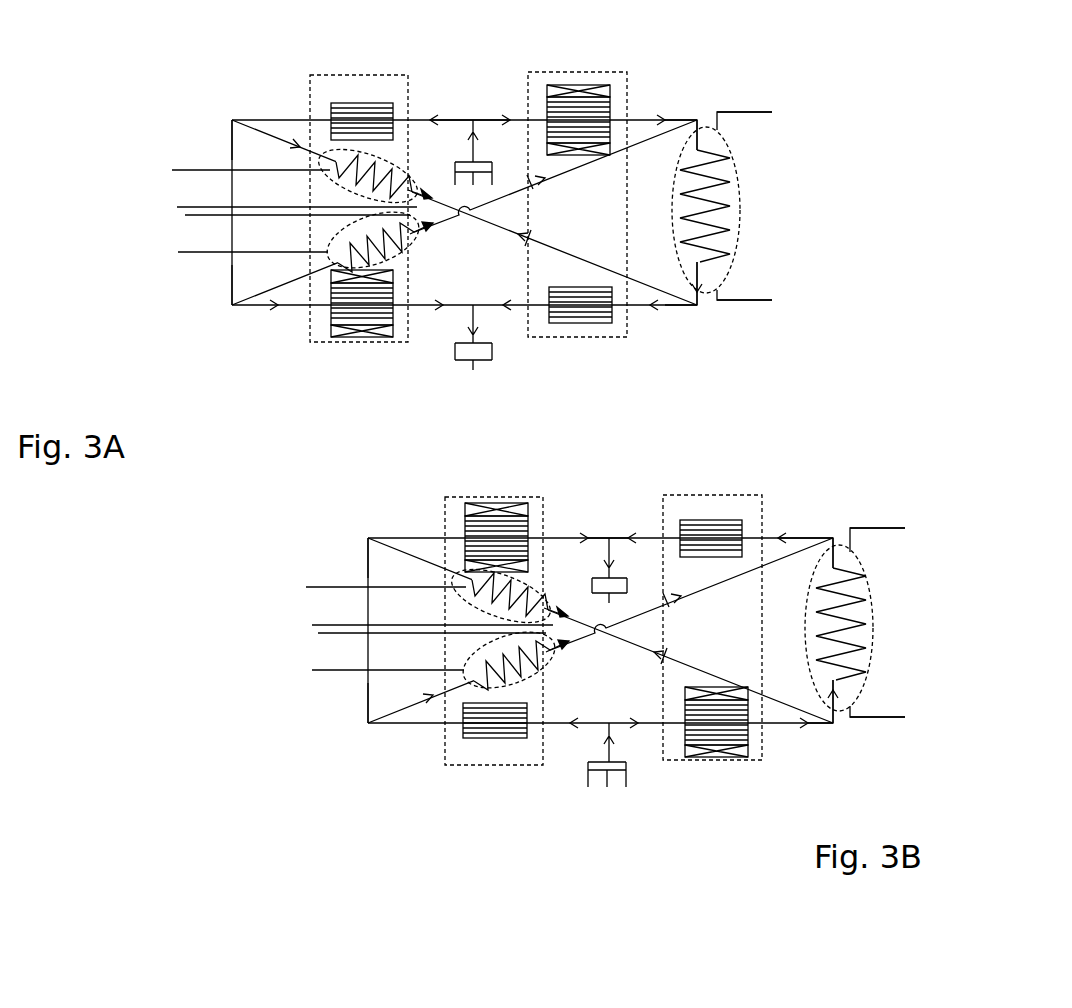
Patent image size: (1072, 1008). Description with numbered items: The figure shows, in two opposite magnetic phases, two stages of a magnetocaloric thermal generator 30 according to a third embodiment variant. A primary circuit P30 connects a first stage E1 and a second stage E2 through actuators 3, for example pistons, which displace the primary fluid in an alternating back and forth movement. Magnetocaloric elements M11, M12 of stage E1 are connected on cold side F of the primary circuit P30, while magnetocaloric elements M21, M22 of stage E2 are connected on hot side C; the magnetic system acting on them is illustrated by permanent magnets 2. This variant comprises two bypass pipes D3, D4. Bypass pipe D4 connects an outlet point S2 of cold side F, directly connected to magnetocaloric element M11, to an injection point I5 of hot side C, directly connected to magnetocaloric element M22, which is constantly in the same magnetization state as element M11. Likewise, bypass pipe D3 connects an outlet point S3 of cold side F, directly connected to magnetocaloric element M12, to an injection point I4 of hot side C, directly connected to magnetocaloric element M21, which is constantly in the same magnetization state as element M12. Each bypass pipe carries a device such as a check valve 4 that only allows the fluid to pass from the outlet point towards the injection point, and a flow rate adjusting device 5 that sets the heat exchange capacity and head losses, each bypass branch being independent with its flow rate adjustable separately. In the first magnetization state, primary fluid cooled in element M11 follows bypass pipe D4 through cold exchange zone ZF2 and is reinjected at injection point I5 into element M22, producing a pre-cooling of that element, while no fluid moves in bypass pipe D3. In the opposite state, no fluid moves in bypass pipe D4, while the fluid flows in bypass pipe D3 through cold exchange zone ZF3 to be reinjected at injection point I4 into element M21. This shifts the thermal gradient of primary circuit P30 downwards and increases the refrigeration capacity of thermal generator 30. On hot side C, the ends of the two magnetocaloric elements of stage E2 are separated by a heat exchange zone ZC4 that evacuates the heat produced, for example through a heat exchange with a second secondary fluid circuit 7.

In FIG. 3A, the cold side F is at (192, 145).
In FIG. 3B, the cold side F is at (423, 561).
In FIG. 3A, the outlet point S2 is at (232, 120).
In FIG. 3B, the outlet point S2 is at (382, 528).
In FIG. 3A, the outlet point S3 is at (232, 305).
In FIG. 3B, the outlet point S3 is at (325, 704).
In FIG. 3A, the permanent magnets 2 is at (332, 330).
In FIG. 3B, the permanent magnets 2 is at (583, 613).
In FIG. 3A, the stage E1 is at (355, 343).
In FIG. 3B, the stage E1 is at (494, 667).
In FIG. 3A, the stage E2 is at (570, 340).
In FIG. 3B, the stage E2 is at (712, 667).
In FIG. 3A, the magnetocaloric element M11 is at (367, 122).
In FIG. 3B, the magnetocaloric element M11 is at (509, 515).
In FIG. 3A, the magnetocaloric element M12 is at (375, 318).
In FIG. 3B, the magnetocaloric element M12 is at (513, 772).
In FIG. 3A, the magnetocaloric element M21 is at (585, 135).
In FIG. 3B, the magnetocaloric element M21 is at (729, 514).
In FIG. 3A, the magnetocaloric element M22 is at (595, 315).
In FIG. 3B, the magnetocaloric element M22 is at (730, 768).
In FIG. 3A, the cold exchange zone ZF2 is at (393, 166).
In FIG. 3B, the cold exchange zone ZF2 is at (534, 536).
In FIG. 3A, the cold exchange zone ZF3 is at (412, 252).
In FIG. 3B, the cold exchange zone ZF3 is at (548, 730).
In FIG. 3A, the primary circuit P30 is at (458, 120).
In FIG. 3B, the primary circuit P30 is at (626, 505).
In FIG. 3A, the actuators 3 is at (485, 352).
In FIG. 3B, the actuators 3 is at (618, 662).
In FIG. 3A, the check valve 4 is at (432, 200).
In FIG. 3B, the check valve 4 is at (574, 649).
In FIG. 3A, the flow rate adjusting device 5 is at (542, 232).
In FIG. 3B, the flow rate adjusting device 5 is at (689, 628).
In FIG. 3A, the injection point I4 is at (697, 120).
In FIG. 3B, the injection point I4 is at (833, 518).
In FIG. 3A, the injection point I5 is at (697, 305).
In FIG. 3B, the injection point I5 is at (853, 734).
In FIG. 3A, the bypass pipe D3 is at (640, 143).
In FIG. 3B, the bypass pipe D3 is at (600, 630).
In FIG. 3A, the bypass pipe D4 is at (647, 285).
In FIG. 3B, the bypass pipe D4 is at (600, 630).
In FIG. 3A, the second secondary fluid circuit 7 is at (752, 112).
In FIG. 3B, the second secondary fluid circuit 7 is at (893, 607).
In FIG. 3A, the hot side C is at (767, 144).
In FIG. 3B, the hot side C is at (923, 606).
In FIG. 3A, the heat exchange zone ZC4 is at (742, 207).
In FIG. 3B, the heat exchange zone ZC4 is at (902, 628).
In FIG. 3A, the magnetocaloric thermal generator 30 is at (933, 172).